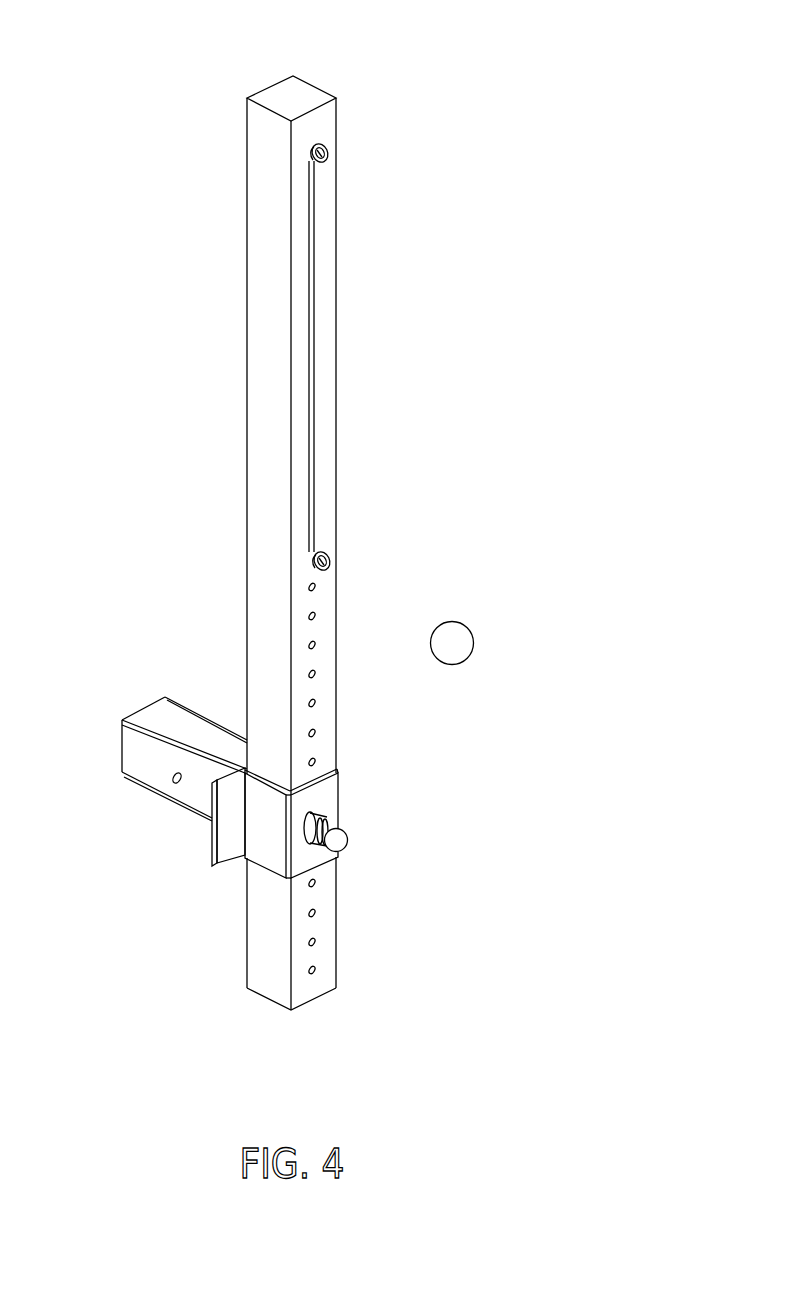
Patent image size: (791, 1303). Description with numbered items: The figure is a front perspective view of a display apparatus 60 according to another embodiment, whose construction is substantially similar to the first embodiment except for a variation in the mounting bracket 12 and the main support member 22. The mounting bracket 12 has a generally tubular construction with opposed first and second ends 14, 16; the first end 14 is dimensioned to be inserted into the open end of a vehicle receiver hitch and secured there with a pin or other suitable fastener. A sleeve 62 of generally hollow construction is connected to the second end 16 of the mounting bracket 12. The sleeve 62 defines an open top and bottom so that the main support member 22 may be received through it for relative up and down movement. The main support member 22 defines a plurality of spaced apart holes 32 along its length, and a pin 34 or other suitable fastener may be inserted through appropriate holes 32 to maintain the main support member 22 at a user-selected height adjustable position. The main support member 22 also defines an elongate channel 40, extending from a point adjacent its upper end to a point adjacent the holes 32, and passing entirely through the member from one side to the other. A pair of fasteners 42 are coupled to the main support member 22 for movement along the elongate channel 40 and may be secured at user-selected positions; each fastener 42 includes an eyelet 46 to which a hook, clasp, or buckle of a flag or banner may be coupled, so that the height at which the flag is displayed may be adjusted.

The display apparatus 60 is at (567, 103).
The main support member 22 is at (390, 461).
The elongate channel 40 is at (315, 393).
The fastener 42 is at (305, 150).
The eyelet 46 is at (324, 147).
The holes 32 is at (317, 673).
The pin 34 is at (347, 837).
The sleeve 62 is at (260, 864).
The mounting bracket 12 is at (202, 855).
The first end 14 is at (131, 757).
The second end 16 is at (230, 800).